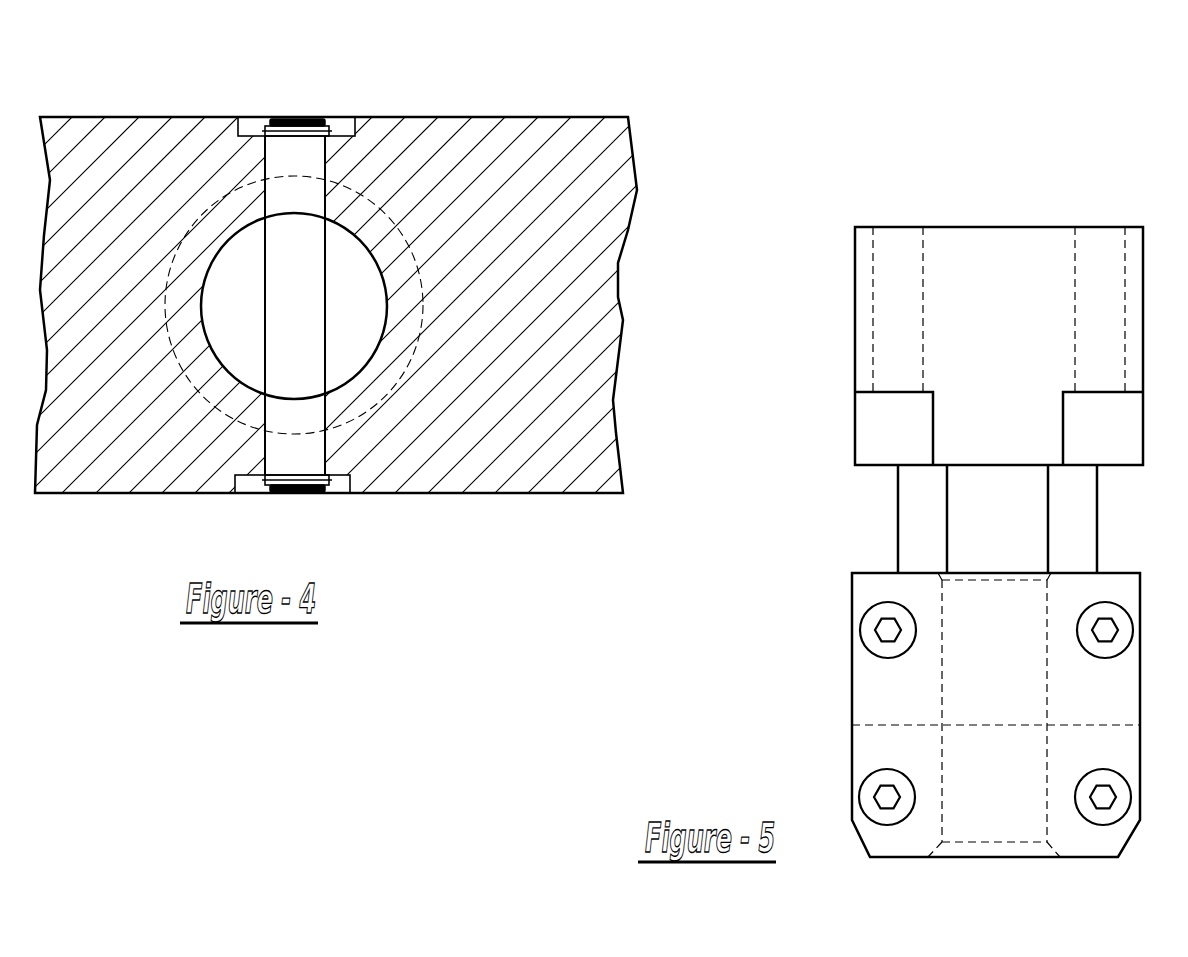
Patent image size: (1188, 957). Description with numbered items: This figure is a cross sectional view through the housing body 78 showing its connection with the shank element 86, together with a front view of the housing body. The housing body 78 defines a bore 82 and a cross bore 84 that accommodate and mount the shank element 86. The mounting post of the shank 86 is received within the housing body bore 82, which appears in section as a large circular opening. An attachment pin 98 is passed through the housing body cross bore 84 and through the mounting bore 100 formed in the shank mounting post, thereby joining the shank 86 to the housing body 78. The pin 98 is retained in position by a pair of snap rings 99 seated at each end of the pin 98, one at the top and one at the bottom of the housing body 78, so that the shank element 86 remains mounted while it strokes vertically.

The housing body 78 is at (503, 493).
The bore 82 is at (380, 257).
The cross bore 84 is at (285, 120).
The shank element 86 is at (343, 257).
The attachment pin 98 is at (325, 441).
The snap rings 99 is at (337, 125).
The mounting bore 100 is at (268, 328).